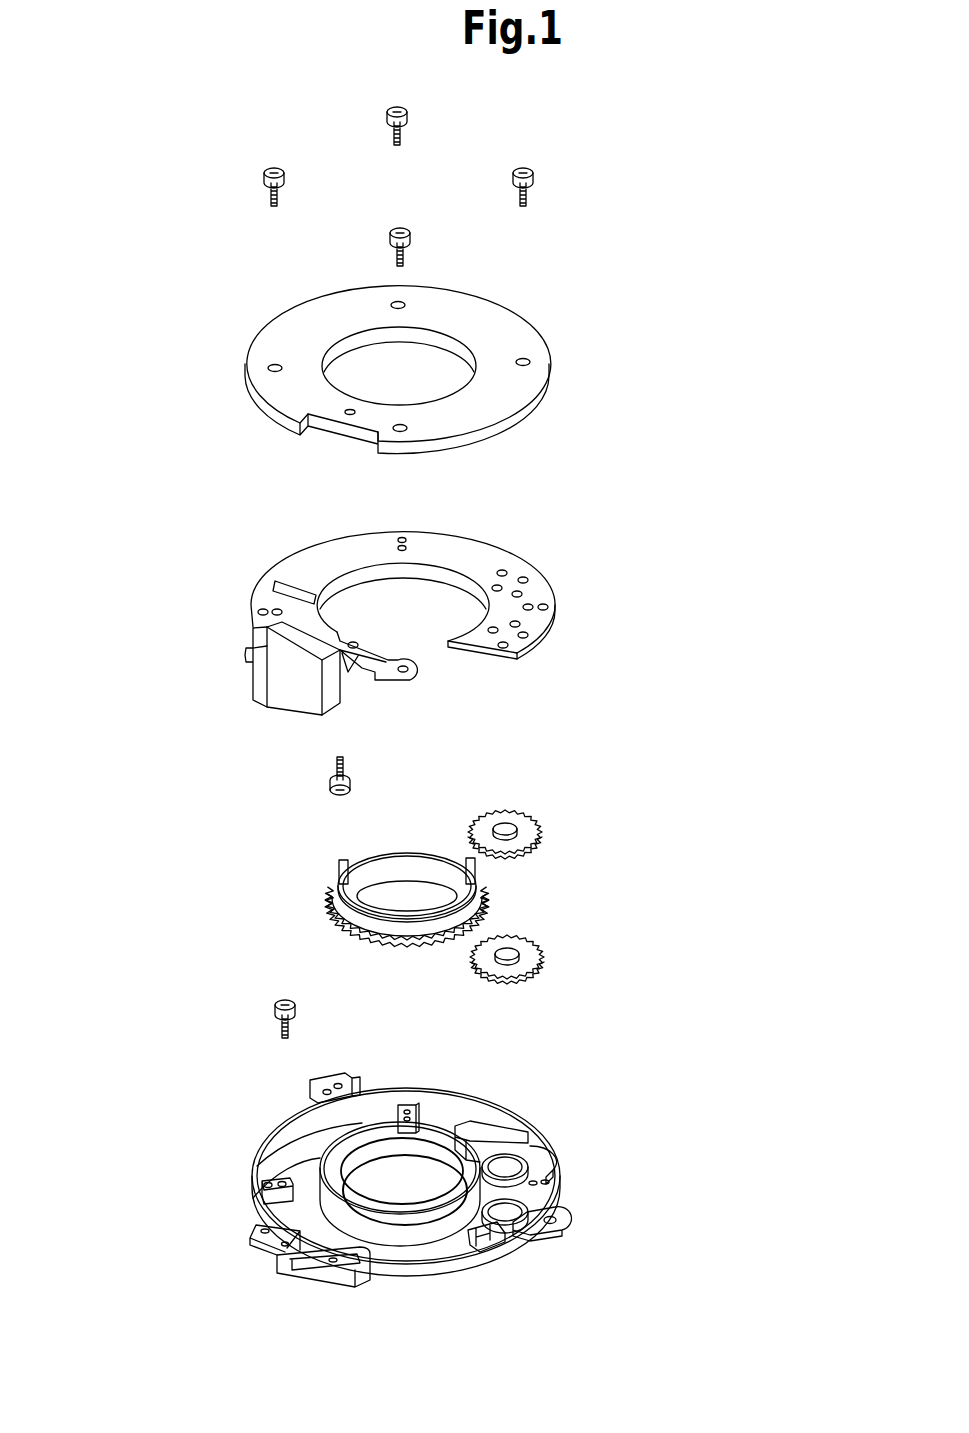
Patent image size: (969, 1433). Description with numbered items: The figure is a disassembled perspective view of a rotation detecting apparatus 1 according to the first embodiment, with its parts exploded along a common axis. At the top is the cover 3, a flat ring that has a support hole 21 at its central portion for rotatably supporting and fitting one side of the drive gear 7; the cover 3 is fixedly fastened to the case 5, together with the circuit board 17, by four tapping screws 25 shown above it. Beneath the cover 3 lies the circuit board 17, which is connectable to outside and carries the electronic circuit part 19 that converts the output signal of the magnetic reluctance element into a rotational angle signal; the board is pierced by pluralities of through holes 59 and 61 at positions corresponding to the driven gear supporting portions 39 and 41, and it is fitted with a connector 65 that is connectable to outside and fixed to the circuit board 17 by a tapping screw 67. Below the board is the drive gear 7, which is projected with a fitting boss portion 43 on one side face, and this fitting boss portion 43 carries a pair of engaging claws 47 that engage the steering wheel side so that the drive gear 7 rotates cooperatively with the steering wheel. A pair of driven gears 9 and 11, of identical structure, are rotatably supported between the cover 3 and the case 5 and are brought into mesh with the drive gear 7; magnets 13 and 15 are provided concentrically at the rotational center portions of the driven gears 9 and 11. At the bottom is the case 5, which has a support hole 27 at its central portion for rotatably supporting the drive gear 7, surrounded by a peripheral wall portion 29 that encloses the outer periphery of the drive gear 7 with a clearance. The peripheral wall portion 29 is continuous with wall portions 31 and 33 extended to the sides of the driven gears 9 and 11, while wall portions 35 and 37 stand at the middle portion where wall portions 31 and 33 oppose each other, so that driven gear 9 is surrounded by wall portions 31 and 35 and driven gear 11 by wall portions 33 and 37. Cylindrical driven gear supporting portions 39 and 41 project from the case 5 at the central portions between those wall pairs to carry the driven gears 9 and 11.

The rotation detecting apparatus 1 is at (650, 205).
The cover 3 is at (403, 351).
The case 5 is at (428, 1183).
The drive gear 7 is at (394, 868).
The driven gear 9 is at (532, 935).
The driven gear 11 is at (540, 802).
The magnet 13 is at (510, 951).
The magnet 15 is at (505, 826).
The circuit board 17 is at (409, 618).
The electronic circuit part 19 is at (285, 578).
The support hole 21 is at (355, 343).
The tapping screws 25 is at (405, 130).
The support hole 27 is at (355, 1165).
The peripheral wall portion 29 is at (290, 1180).
The wall portion 31 is at (468, 1226).
The wall portion 33 is at (494, 1126).
The wall portion 35 is at (549, 1187).
The wall portion 37 is at (548, 1165).
The driven gear supporting portion 39 is at (508, 1215).
The driven gear supporting portion 41 is at (531, 1151).
The fitting boss portion 43 is at (392, 851).
The engaging claws 47 is at (326, 897).
The through holes 59 is at (526, 635).
The through holes 61 is at (528, 581).
The connector 65 is at (288, 692).
The tapping screw 67 is at (350, 772).